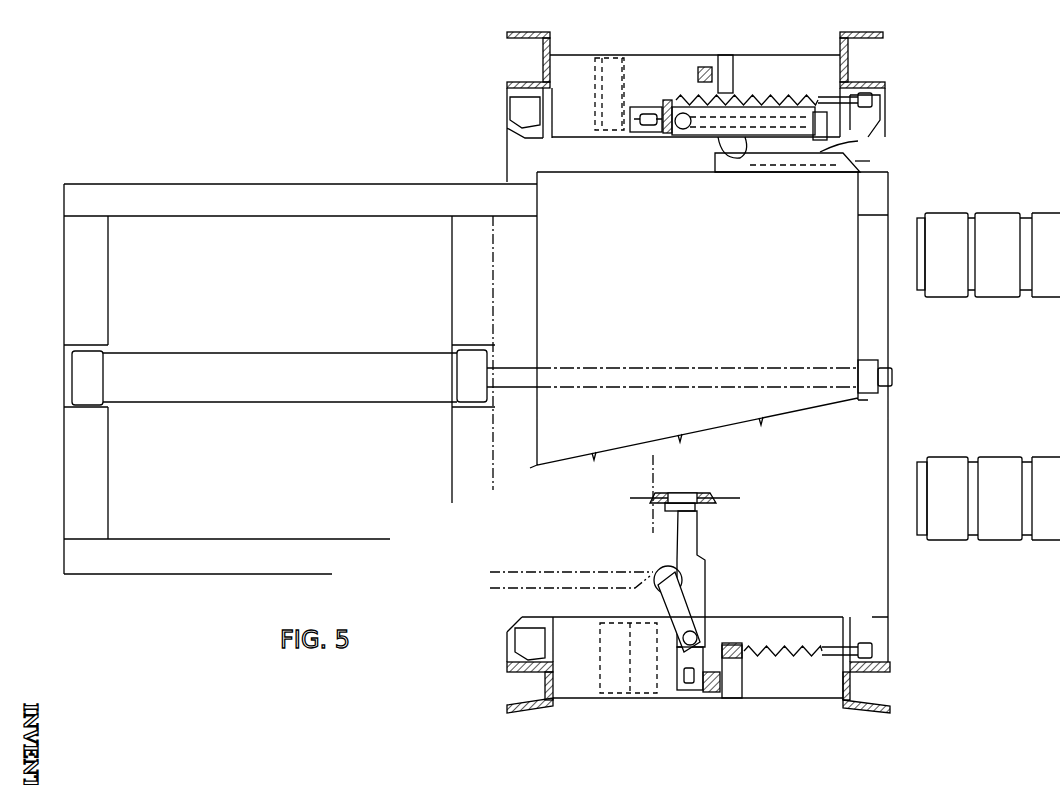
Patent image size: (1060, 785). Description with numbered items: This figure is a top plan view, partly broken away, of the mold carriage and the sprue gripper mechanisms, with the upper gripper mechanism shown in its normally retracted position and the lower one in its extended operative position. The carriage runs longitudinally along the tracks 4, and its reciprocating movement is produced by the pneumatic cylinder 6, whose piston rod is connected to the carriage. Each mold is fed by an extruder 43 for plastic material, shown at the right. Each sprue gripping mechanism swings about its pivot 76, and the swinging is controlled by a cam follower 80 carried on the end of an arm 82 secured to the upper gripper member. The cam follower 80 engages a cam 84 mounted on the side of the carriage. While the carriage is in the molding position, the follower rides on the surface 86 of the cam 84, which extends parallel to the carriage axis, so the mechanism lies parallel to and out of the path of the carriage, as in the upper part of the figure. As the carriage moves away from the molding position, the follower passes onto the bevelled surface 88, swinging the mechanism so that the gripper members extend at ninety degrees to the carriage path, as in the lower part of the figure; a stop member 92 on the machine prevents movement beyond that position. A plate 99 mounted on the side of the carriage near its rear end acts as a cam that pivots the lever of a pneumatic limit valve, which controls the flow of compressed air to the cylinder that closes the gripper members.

The tracks 4 is at (297, 190).
The pneumatic cylinder 6 is at (317, 387).
The extruder 43 is at (991, 307).
The pivot 76 is at (668, 122).
The cam follower 80 is at (745, 155).
The arm 82 is at (672, 605).
The cam 84 is at (714, 160).
The surface 86 is at (858, 141).
The bevelled surface 88 is at (870, 161).
The stop member 92 is at (712, 672).
The plate 99 is at (786, 166).